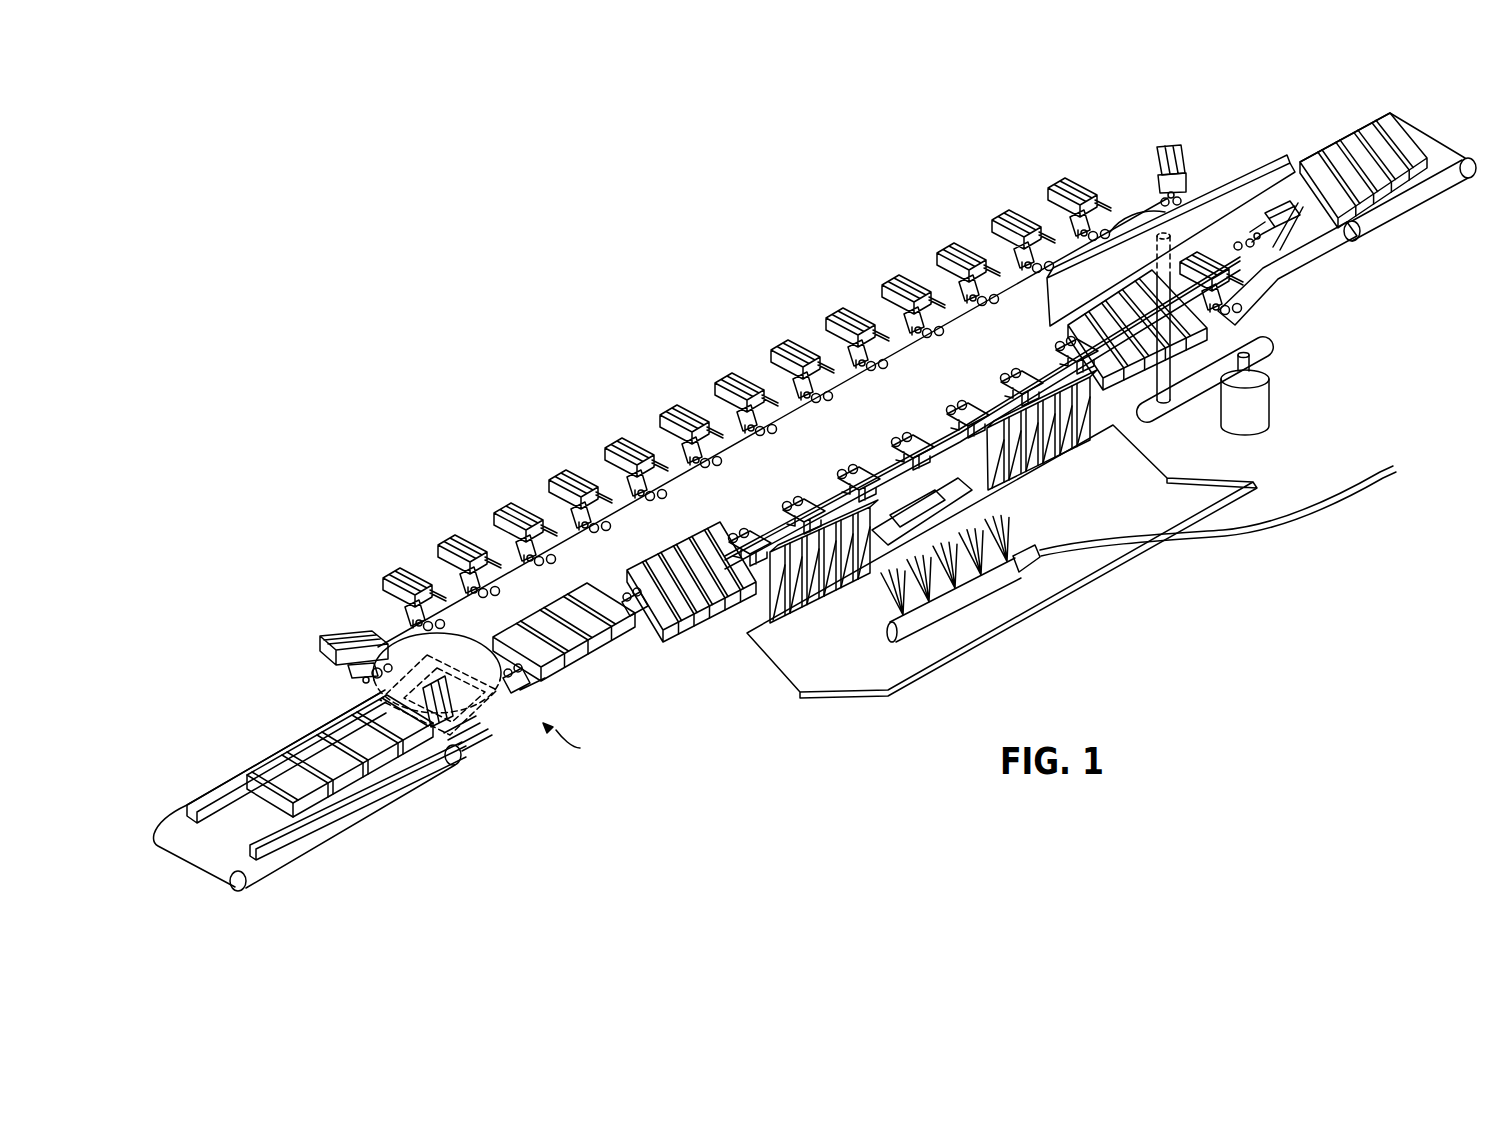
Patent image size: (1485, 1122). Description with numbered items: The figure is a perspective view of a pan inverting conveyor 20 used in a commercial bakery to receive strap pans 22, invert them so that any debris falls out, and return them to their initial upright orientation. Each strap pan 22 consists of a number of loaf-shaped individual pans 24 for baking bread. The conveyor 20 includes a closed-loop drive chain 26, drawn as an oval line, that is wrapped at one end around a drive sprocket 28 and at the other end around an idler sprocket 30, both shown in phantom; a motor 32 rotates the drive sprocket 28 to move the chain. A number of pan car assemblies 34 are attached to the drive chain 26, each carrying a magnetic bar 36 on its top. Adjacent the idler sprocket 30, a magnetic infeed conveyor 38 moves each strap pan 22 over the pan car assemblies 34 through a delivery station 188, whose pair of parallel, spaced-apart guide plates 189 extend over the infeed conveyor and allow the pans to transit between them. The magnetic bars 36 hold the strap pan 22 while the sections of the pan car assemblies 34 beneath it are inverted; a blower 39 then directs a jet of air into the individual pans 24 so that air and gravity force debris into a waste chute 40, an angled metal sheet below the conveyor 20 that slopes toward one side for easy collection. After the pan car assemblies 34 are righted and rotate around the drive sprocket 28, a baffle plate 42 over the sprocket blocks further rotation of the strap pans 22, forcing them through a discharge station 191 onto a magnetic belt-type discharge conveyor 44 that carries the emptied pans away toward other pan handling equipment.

The pan inverting conveyor 20 is at (552, 258).
The strap pan 22 is at (276, 794).
The individual pan 24 is at (318, 745).
The drive chain 26 is at (744, 428).
The drive sprocket 28 is at (1140, 222).
The idler sprocket 30 is at (434, 652).
The motor 32 is at (1262, 408).
The pan car assembly 34 is at (383, 590).
The magnetic bar 36 is at (612, 447).
The magnetic infeed conveyor 38 is at (316, 835).
The blower 39 is at (1010, 572).
The waste chute 40 is at (1113, 492).
The baffle plate 42 is at (1116, 294).
The magnetic belt-type discharge conveyor 44 is at (1408, 200).
The delivery station 188 is at (586, 745).
The guide plate 189 is at (208, 796).
The discharge station 191 is at (1370, 265).